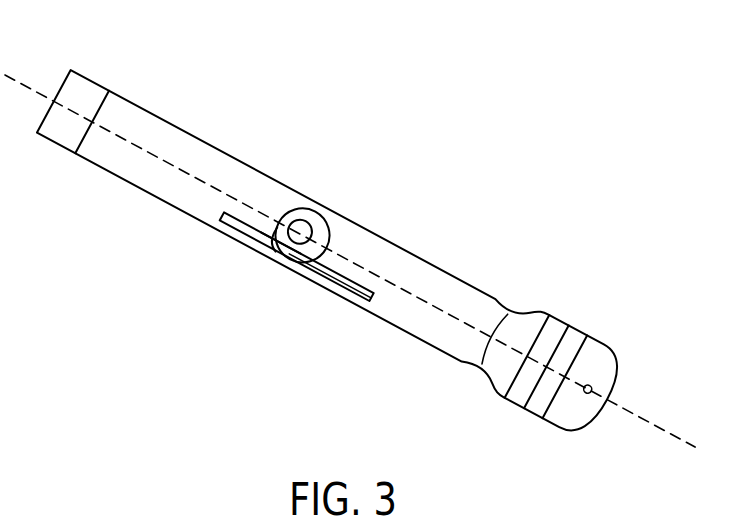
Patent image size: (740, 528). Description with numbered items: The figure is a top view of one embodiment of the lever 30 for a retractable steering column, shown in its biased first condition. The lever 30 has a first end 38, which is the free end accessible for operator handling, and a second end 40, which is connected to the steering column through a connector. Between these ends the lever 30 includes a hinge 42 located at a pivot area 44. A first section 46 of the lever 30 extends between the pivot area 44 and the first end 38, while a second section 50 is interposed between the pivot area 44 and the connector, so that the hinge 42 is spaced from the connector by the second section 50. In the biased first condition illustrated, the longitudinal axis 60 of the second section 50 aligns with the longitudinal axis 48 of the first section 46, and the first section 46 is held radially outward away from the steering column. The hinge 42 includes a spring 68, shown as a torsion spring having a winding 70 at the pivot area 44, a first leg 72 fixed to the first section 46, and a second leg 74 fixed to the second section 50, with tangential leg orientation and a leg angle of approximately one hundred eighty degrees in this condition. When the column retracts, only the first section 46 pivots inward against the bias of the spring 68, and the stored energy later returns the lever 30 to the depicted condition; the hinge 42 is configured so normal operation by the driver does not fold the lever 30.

The lever 30 is at (291, 137).
The first end 38 is at (617, 364).
The second end 40 is at (78, 148).
The hinge 42 is at (313, 226).
The pivot area 44 is at (305, 273).
The first section 46 is at (483, 312).
The longitudinal axis of the first section 48 is at (648, 423).
The second section 50 is at (161, 124).
The longitudinal axis of the second section 60 is at (20, 82).
The spring 68 is at (287, 247).
The winding 70 is at (302, 217).
The first leg 72 is at (343, 291).
The second leg 74 is at (228, 232).